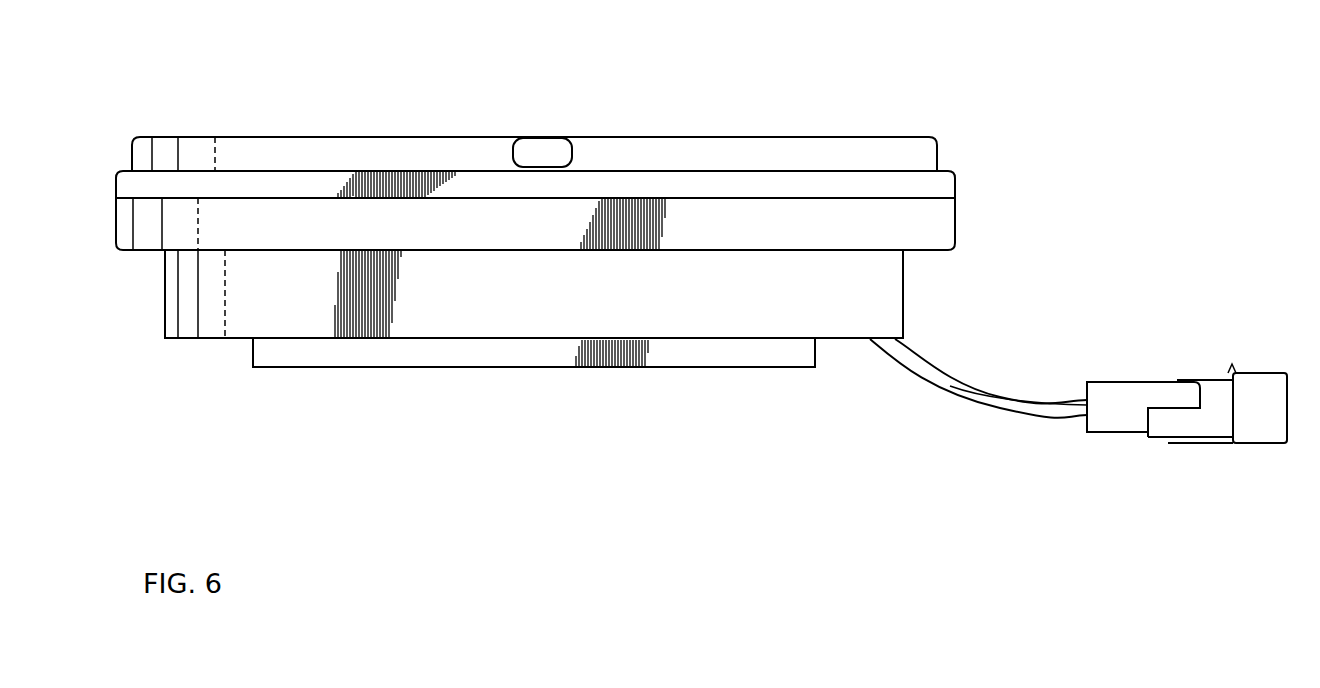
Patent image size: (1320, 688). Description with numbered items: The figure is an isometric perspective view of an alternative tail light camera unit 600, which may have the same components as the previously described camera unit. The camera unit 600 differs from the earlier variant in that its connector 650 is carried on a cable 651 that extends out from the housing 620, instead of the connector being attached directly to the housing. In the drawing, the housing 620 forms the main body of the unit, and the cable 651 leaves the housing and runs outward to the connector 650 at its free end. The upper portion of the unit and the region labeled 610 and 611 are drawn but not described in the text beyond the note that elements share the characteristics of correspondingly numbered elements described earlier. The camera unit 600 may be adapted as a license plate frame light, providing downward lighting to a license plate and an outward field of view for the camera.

The tail light camera unit 600 is at (542, 481).
The housing 610 is at (438, 142).
The housing cover 611 is at (205, 137).
The housing 620 is at (241, 308).
The connector 650 is at (1153, 380).
The cable 651 is at (987, 387).